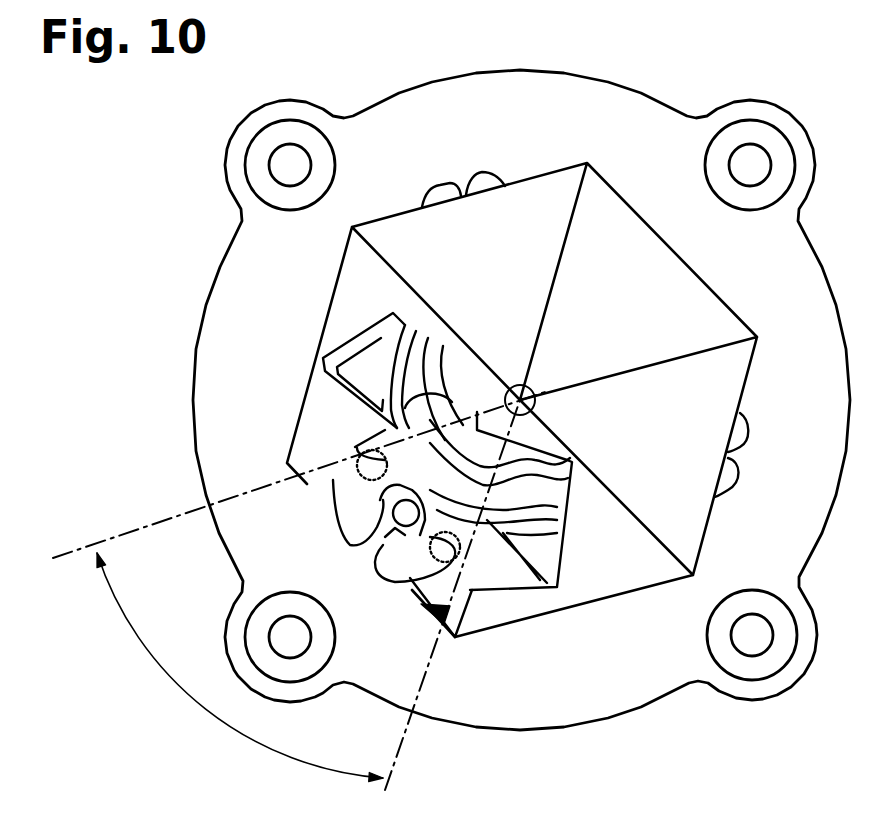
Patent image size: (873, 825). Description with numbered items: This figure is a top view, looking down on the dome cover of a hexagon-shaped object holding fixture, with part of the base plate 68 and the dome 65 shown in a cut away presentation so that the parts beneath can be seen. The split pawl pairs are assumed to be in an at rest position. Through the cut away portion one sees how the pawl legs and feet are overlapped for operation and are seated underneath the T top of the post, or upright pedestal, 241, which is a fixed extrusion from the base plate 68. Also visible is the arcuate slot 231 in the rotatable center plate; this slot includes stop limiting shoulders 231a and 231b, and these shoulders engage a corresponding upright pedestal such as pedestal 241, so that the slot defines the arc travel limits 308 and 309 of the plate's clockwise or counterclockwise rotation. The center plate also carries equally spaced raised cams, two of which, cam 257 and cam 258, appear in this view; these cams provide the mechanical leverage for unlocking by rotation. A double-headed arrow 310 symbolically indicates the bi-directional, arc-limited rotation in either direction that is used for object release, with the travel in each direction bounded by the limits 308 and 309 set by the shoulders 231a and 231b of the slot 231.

The base plate 68 is at (613, 117).
The dome 65 is at (648, 306).
The raised cam 258 is at (348, 408).
The arcuate slot 231 is at (390, 492).
The stop limiting shoulder 231a is at (352, 455).
The stop limiting shoulder 231b is at (445, 553).
The upright pedestal 241 is at (357, 478).
The raised cam 257 is at (497, 557).
The arc travel limit 308 is at (134, 531).
The arc travel limit 309 is at (397, 748).
The double-headed arrow 310 is at (197, 702).